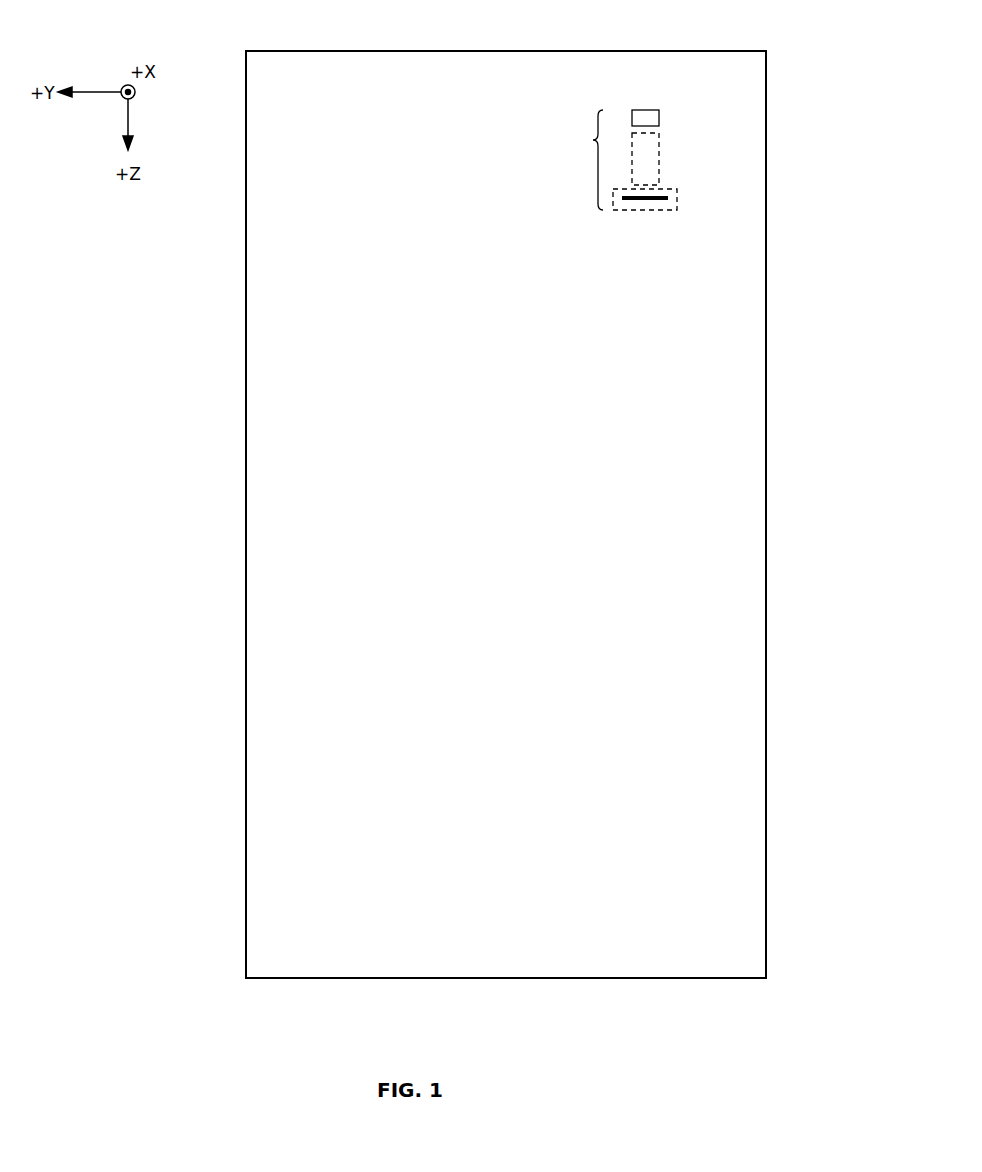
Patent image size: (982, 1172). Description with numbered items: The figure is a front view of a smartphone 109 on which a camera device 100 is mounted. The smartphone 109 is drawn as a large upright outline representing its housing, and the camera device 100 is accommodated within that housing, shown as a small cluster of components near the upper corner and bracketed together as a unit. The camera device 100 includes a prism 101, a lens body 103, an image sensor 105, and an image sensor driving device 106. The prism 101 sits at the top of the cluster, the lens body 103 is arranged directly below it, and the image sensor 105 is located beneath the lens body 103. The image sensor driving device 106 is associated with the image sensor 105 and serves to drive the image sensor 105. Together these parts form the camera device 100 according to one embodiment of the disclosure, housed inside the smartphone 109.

The camera device 100 is at (593, 140).
The prism 101 is at (659, 117).
The lens body 103 is at (659, 155).
The image sensor 105 is at (677, 197).
The image sensor driving device 106 is at (677, 207).
The smartphone 109 is at (246, 662).